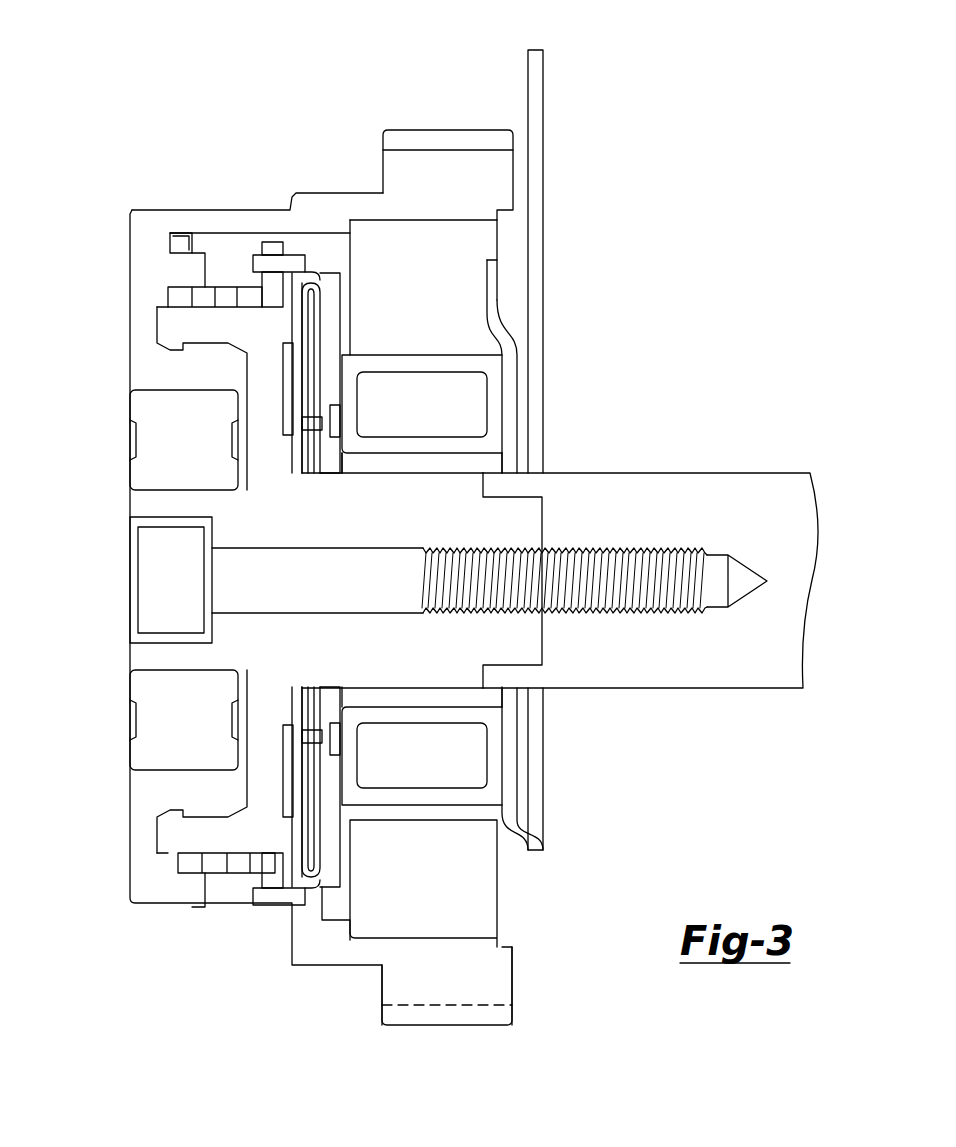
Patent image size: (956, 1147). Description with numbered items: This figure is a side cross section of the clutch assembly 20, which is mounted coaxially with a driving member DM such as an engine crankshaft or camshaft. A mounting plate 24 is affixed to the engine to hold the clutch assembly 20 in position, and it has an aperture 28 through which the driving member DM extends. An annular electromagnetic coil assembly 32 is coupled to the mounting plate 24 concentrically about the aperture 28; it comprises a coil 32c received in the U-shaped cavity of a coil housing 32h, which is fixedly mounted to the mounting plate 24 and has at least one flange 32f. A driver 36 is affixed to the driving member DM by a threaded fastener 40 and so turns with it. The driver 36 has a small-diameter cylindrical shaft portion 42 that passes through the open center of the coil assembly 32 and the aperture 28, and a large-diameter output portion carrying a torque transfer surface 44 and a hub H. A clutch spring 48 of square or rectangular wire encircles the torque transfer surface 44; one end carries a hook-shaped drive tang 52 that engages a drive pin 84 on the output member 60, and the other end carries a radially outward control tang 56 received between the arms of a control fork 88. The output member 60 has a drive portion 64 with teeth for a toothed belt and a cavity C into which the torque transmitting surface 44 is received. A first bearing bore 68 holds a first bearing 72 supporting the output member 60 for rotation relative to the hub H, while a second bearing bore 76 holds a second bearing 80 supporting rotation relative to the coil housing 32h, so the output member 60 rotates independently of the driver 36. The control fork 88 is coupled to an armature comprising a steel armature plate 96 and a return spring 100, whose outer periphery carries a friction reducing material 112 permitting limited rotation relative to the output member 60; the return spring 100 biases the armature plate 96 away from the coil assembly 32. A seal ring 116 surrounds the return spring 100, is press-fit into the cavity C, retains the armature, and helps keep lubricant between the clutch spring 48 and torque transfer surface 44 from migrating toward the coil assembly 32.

The clutch assembly 20 is at (160, 78).
The mounting plate 24 is at (545, 85).
The aperture 28 is at (510, 700).
The coil assembly 32 is at (458, 395).
The coil 32c is at (470, 410).
The flange 32f is at (350, 455).
The coil housing 32h is at (445, 355).
The driver 36 is at (538, 508).
The threaded fastener 40 is at (145, 578).
The shaft portion 42 is at (457, 668).
The torque transfer surface 44 is at (215, 327).
The clutch spring 48 is at (218, 860).
The drive tang 52 is at (187, 235).
The control tang 56 is at (272, 242).
The output member 60 is at (148, 210).
The drive portion 64 is at (437, 125).
The first bearing bore 68 is at (148, 780).
The first bearing 72 is at (148, 718).
The second bearing bore 76 is at (463, 940).
The second bearing 80 is at (465, 915).
The drive pin 84 is at (193, 264).
The control fork 88 is at (295, 255).
The armature plate 96 is at (332, 303).
The return spring 100 is at (310, 830).
The friction reducing material 112 is at (293, 873).
The seal ring 116 is at (320, 281).
The cavity C is at (237, 378).
The hub H is at (150, 660).
The driving member DM is at (708, 485).